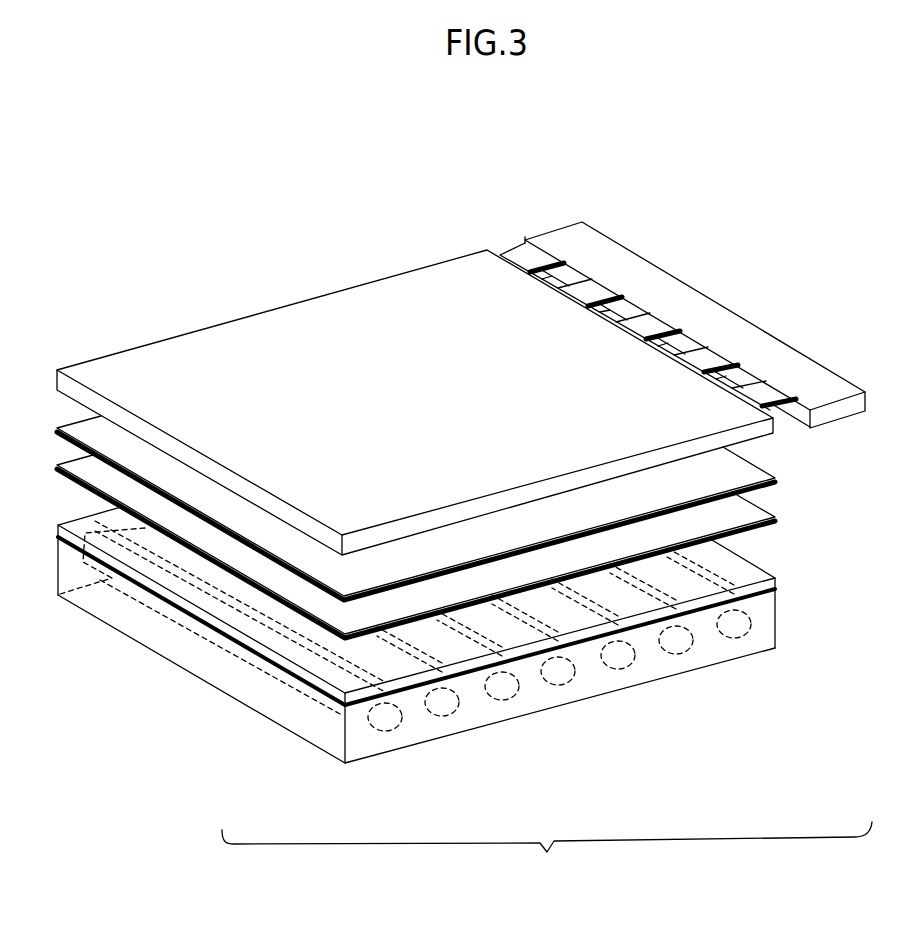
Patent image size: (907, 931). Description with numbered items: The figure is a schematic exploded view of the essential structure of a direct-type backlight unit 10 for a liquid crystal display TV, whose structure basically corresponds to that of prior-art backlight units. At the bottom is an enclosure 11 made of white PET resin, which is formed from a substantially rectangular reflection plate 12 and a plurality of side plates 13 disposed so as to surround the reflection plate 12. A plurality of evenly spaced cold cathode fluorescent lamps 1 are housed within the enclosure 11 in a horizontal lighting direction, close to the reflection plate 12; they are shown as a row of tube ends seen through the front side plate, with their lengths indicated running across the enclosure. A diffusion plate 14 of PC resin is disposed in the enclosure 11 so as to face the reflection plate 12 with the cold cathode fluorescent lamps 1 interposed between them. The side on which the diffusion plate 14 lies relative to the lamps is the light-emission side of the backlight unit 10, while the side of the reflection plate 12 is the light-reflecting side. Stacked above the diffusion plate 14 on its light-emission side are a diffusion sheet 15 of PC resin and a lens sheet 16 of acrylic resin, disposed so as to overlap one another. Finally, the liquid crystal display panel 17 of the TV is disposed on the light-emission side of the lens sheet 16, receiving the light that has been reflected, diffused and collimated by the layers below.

The cold cathode fluorescent lamp 1 is at (562, 670).
The backlight unit 10 is at (547, 858).
The enclosure 11 is at (203, 679).
The reflection plate 12 is at (425, 726).
The side plate 13 is at (305, 740).
The diffusion plate 14 is at (158, 588).
The diffusion sheet 15 is at (748, 509).
The lens sheet 16 is at (748, 468).
The liquid crystal display panel 17 is at (115, 365).